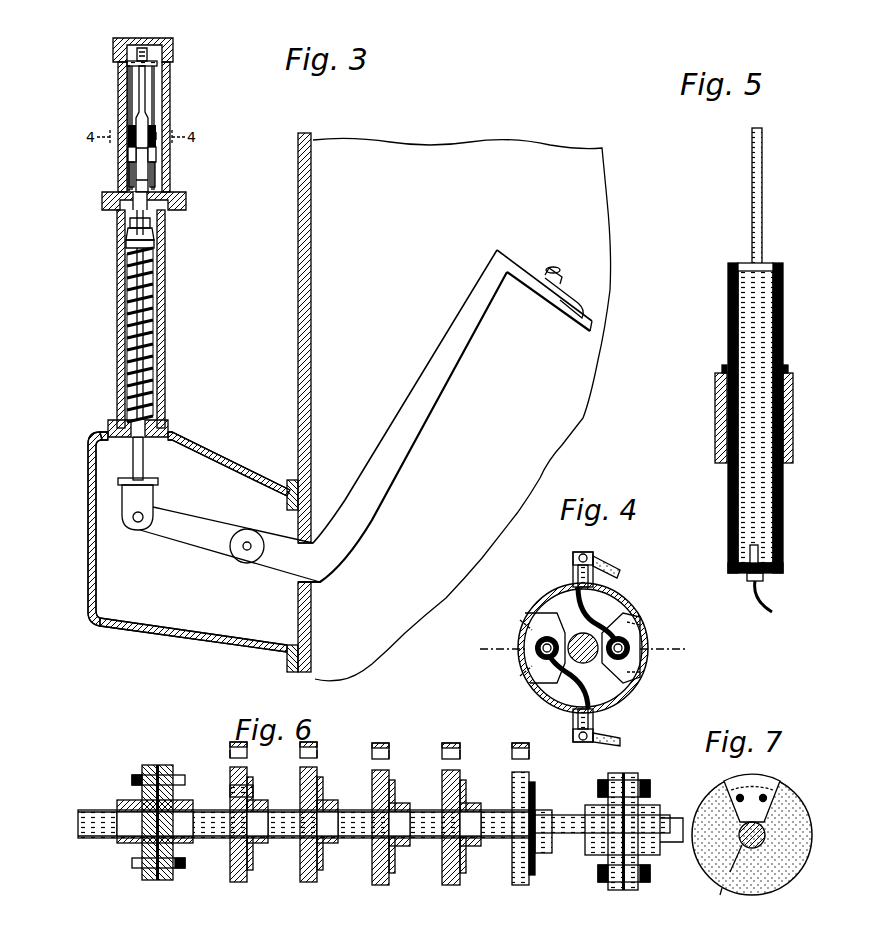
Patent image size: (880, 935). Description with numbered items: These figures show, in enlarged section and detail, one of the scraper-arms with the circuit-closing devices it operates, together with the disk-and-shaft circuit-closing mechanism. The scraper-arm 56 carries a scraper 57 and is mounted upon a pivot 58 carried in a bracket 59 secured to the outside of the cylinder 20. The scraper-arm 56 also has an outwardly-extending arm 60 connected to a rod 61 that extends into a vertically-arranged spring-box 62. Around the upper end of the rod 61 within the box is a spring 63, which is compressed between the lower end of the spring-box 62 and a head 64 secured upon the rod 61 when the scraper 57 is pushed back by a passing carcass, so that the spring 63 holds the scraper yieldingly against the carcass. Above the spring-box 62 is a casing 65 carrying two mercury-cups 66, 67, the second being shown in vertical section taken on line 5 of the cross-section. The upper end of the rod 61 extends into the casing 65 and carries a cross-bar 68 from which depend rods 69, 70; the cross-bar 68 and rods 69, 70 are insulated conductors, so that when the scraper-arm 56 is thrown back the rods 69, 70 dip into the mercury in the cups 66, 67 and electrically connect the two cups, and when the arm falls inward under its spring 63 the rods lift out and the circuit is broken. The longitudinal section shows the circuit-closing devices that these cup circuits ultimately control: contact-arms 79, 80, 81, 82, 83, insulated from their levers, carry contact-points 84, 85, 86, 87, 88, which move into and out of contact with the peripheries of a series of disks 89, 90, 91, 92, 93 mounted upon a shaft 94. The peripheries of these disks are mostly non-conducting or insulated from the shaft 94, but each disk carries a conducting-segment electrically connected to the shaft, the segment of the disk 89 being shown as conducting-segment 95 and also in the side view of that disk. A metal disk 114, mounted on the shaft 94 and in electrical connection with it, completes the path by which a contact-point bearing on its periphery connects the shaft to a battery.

In FIG. 3, the cylinder 20 is at (312, 330).
In FIG. 3, the scraper-arm 56 is at (385, 465).
In FIG. 3, the scraper 57 is at (574, 318).
In FIG. 3, the pivot 58 is at (247, 542).
In FIG. 3, the bracket 59 is at (225, 650).
In FIG. 3, the outwardly-extending arm 60 is at (230, 544).
In FIG. 3, the rod 61 is at (137, 112).
In FIG. 4, the rod 61 is at (587, 664).
In FIG. 3, the spring-box 62 is at (160, 290).
In FIG. 3, the spring 63 is at (165, 322).
In FIG. 3, the head 64 is at (150, 235).
In FIG. 3, the casing 65 is at (170, 97).
In FIG. 4, the casing 65 is at (608, 590).
In FIG. 3, the mercury-cup 66 is at (157, 125).
In FIG. 4, the mercury-cup 66 is at (630, 642).
In FIG. 5, the mercury-cup 66 is at (783, 300).
In FIG. 3, the mercury-cup 67 is at (128, 128).
In FIG. 4, the mercury-cup 67 is at (545, 628).
In FIG. 3, the cross-bar 68 is at (149, 61).
In FIG. 3, the rod 69 is at (155, 78).
In FIG. 5, the rod 69 is at (762, 196).
In FIG. 3, the rod 70 is at (129, 80).
In FIG. 4, the section line 5 is at (580, 648).
In FIG. 6, the contact-arm 79 is at (238, 742).
In FIG. 6, the contact-arm 80 is at (312, 742).
In FIG. 6, the contact-arm 81 is at (380, 743).
In FIG. 6, the contact-arm 82 is at (452, 743).
In FIG. 6, the contact-arm 83 is at (522, 743).
In FIG. 6, the contact-point 84 is at (229, 752).
In FIG. 6, the contact-point 85 is at (318, 752).
In FIG. 6, the contact-point 86 is at (390, 752).
In FIG. 6, the contact-point 87 is at (461, 752).
In FIG. 6, the contact-point 88 is at (530, 752).
In FIG. 6, the disk 89 is at (238, 882).
In FIG. 7, the disk 89 is at (792, 880).
In FIG. 6, the disk 90 is at (308, 882).
In FIG. 6, the disk 91 is at (380, 885).
In FIG. 6, the disk 92 is at (450, 885).
In FIG. 6, the disk 93 is at (520, 885).
In FIG. 6, the shaft 94 is at (427, 810).
In FIG. 7, the shaft 94 is at (752, 835).
In FIG. 6, the conducting-segment 95 is at (229, 770).
In FIG. 7, the conducting-segment 95 is at (764, 782).
In FIG. 6, the metal disk 114 is at (615, 773).